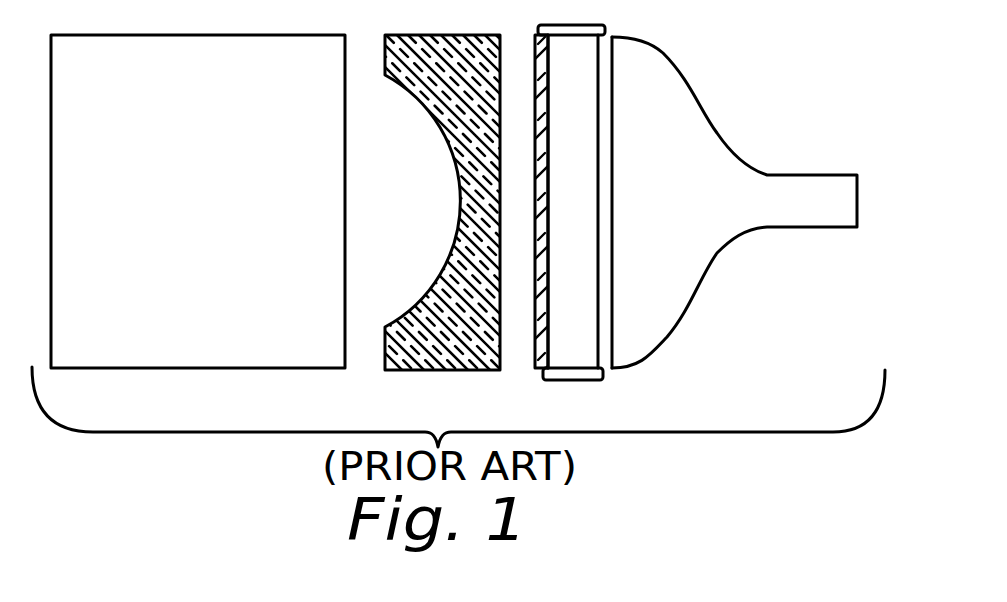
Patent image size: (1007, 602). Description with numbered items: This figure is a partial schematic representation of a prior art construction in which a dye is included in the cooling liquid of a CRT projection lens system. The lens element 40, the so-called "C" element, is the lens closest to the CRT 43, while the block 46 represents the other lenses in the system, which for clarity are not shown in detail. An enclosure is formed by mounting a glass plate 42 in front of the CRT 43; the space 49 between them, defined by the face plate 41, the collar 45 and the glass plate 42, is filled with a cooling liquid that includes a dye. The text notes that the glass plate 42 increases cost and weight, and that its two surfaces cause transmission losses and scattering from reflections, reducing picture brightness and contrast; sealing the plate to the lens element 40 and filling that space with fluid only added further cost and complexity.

The lens element 40 is at (397, 372).
The face plate 41 is at (612, 213).
The glass plate 42 is at (534, 370).
The CRT 43 is at (665, 53).
The collar 45 is at (603, 381).
The other lenses 46 is at (190, 370).
The space 49 is at (591, 194).